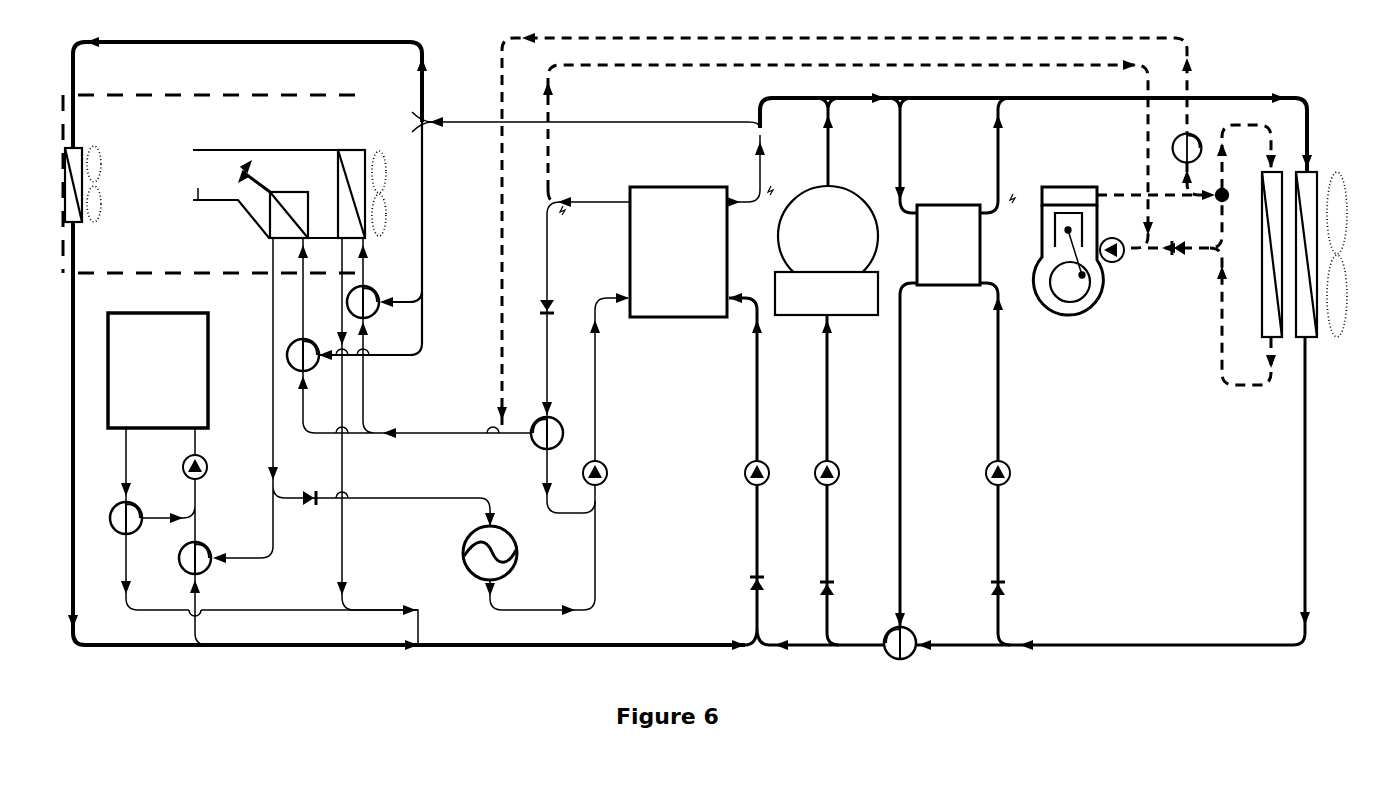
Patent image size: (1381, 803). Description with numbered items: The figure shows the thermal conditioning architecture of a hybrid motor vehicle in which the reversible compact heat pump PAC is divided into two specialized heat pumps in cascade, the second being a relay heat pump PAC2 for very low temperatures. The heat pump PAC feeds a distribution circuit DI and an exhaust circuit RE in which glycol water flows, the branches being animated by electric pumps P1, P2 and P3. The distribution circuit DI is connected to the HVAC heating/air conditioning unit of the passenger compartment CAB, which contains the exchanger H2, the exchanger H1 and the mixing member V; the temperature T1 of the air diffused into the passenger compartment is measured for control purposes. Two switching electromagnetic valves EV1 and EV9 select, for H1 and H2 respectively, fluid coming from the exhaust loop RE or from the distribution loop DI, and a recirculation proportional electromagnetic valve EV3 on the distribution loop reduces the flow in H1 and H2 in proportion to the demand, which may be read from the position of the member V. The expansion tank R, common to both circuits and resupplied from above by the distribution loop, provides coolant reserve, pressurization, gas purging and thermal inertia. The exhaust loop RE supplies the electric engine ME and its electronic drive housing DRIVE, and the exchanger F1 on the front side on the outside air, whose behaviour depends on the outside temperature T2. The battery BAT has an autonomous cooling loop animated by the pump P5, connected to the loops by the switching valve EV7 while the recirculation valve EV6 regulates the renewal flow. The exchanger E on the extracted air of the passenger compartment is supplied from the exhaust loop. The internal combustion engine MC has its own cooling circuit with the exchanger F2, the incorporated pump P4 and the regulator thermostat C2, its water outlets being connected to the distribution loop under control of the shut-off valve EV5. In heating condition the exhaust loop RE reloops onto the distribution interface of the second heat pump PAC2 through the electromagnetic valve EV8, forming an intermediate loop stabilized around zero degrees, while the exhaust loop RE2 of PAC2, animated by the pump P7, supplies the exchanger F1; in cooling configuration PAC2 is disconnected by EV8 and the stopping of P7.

The passenger compartment CAB is at (214, 184).
The exchanger on the extracted air of the passenger compartment E is at (83, 171).
The heating/air conditioning unit HVAC is at (274, 194).
The temperature of the air diffused into the passenger compartment T1 is at (194, 186).
The mixing member V is at (242, 174).
The exchanger H2 is at (289, 201).
The exchanger H1 is at (359, 181).
The electromagnetic valve EV1 is at (376, 303).
The electromagnetic valve EV9 is at (312, 357).
The battery BAT is at (158, 370).
The recirculation electromagnetic valve EV6 is at (116, 530).
The switching electromagnetic valve EV7 is at (206, 561).
The pump P5 is at (182, 467).
The expansion tank R is at (516, 570).
The recirculation proportional electromagnetic valve EV3 is at (563, 363).
The pump P1 is at (600, 445).
The distribution circuit DI is at (588, 217).
The heat pump PAC is at (678, 252).
The exhaust circuit RE is at (601, 171).
The pump P2 is at (1019, 471).
The electric engine ME is at (828, 192).
The electronic drive housing DRIVE is at (826, 293).
The pump P3 is at (818, 480).
The second heat pump PAC2 is at (934, 363).
The exhaust loop RE2 is at (1006, 170).
The pump P7 is at (989, 464).
The electromagnetic valve EV8 is at (945, 635).
The internal combustion heat engine MC is at (1068, 251).
The pump P4 is at (1118, 261).
The shut-off electromagnetic valve EV5 is at (1185, 156).
The regulator thermostat C2 is at (1213, 207).
The exchanger F2 is at (1259, 269).
The exchanger F1 is at (1315, 270).
The outside temperature T2 is at (1349, 254).